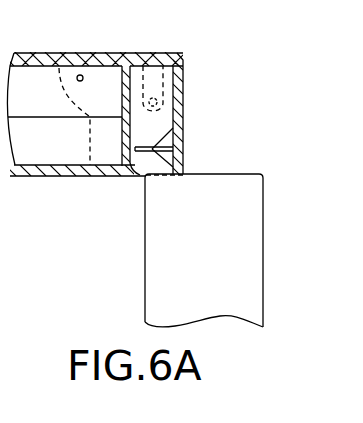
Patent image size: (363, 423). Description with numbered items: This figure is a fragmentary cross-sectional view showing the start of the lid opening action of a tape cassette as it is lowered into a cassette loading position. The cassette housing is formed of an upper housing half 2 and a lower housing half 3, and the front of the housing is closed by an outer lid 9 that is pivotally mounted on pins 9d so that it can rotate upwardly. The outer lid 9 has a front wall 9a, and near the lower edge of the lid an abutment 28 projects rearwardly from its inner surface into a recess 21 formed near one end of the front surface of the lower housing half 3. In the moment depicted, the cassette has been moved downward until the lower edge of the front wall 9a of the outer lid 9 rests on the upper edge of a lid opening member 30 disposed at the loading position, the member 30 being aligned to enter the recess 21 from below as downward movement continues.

The upper housing half 2 is at (27, 52).
The lower housing half 3 is at (40, 177).
The outer lid 9 is at (184, 80).
The front wall 9a is at (183, 108).
The pins 9d is at (82, 76).
The recess 21 is at (136, 180).
The abutment 28 is at (183, 137).
The lid opening member 30 is at (264, 255).